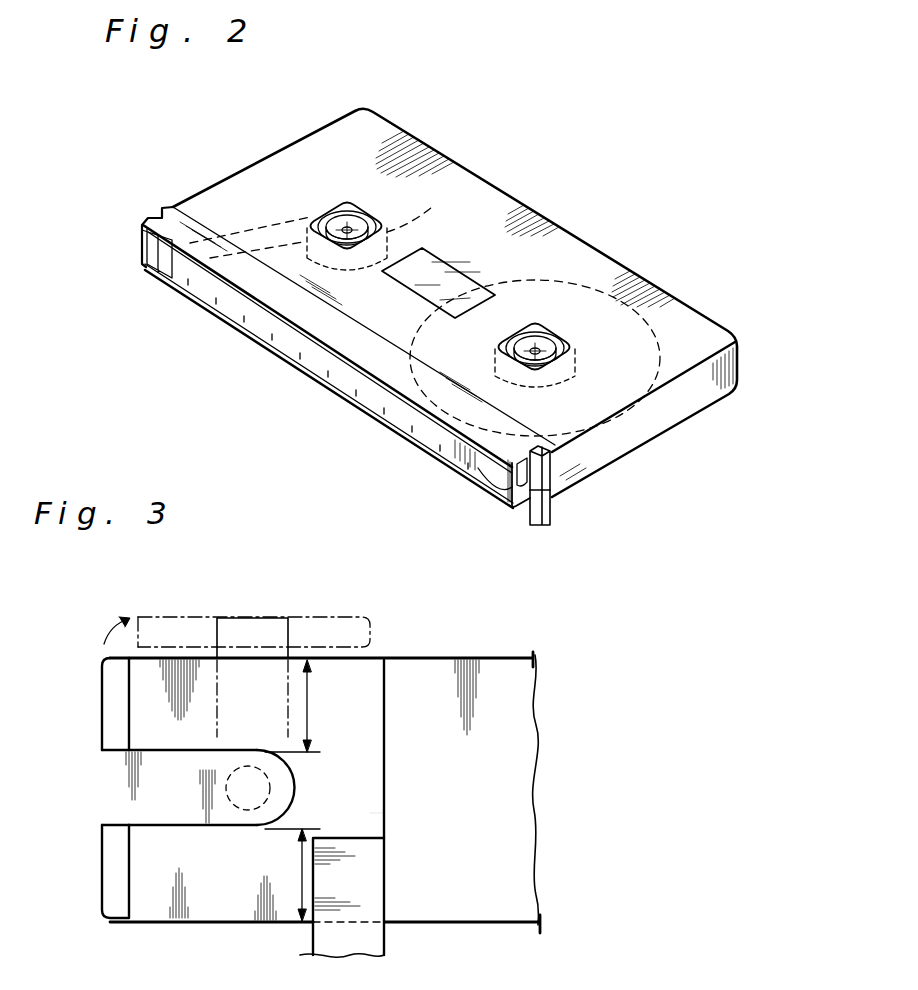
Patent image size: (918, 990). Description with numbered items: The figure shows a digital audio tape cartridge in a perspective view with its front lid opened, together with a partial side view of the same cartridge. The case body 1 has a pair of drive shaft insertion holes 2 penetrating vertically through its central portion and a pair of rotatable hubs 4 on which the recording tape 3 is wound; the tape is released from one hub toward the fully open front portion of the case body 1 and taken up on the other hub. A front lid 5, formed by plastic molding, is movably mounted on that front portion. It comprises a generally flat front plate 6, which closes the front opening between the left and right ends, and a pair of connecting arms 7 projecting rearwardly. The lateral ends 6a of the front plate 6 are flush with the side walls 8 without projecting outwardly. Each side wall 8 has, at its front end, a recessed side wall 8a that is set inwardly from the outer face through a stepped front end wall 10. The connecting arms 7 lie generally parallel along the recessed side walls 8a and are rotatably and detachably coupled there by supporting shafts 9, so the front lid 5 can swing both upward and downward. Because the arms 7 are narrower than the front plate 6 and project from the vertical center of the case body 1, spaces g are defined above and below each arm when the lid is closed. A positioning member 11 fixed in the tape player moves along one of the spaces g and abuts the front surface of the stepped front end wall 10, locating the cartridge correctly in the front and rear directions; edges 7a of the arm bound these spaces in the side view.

In FIG. 2, the case body 1 is at (583, 239).
In FIG. 3, the case body 1 is at (480, 658).
In FIG. 2, the drive shaft insertion holes 2 is at (345, 230).
In FIG. 2, the recording tape 3 is at (437, 444).
In FIG. 2, the rotatable hubs 4 is at (397, 245).
In FIG. 2, the front lid 5 is at (318, 342).
In FIG. 3, the front lid 5 is at (250, 617).
In FIG. 2, the front plate 6 is at (143, 250).
In FIG. 3, the front plate 6 is at (100, 888).
In FIG. 3, the lateral ends of the front plate 6a is at (112, 714).
In FIG. 2, the connecting arms 7 is at (518, 505).
In FIG. 3, the connecting arms 7 is at (213, 763).
In FIG. 3, the pivot pin edges 7a is at (153, 748).
In FIG. 2, the side walls 8 is at (650, 425).
In FIG. 3, the side walls 8 is at (512, 806).
In FIG. 3, the recessed side walls 8a is at (368, 813).
In FIG. 2, the supporting shafts 9 is at (490, 494).
In FIG. 3, the supporting shafts 9 is at (270, 800).
In FIG. 2, the stepped front end wall 10 is at (552, 472).
In FIG. 3, the stepped front end wall 10 is at (368, 753).
In FIG. 2, the positioning member 11 is at (545, 525).
In FIG. 3, the positioning member 11 is at (368, 888).
In FIG. 3, the spaces g is at (308, 706).